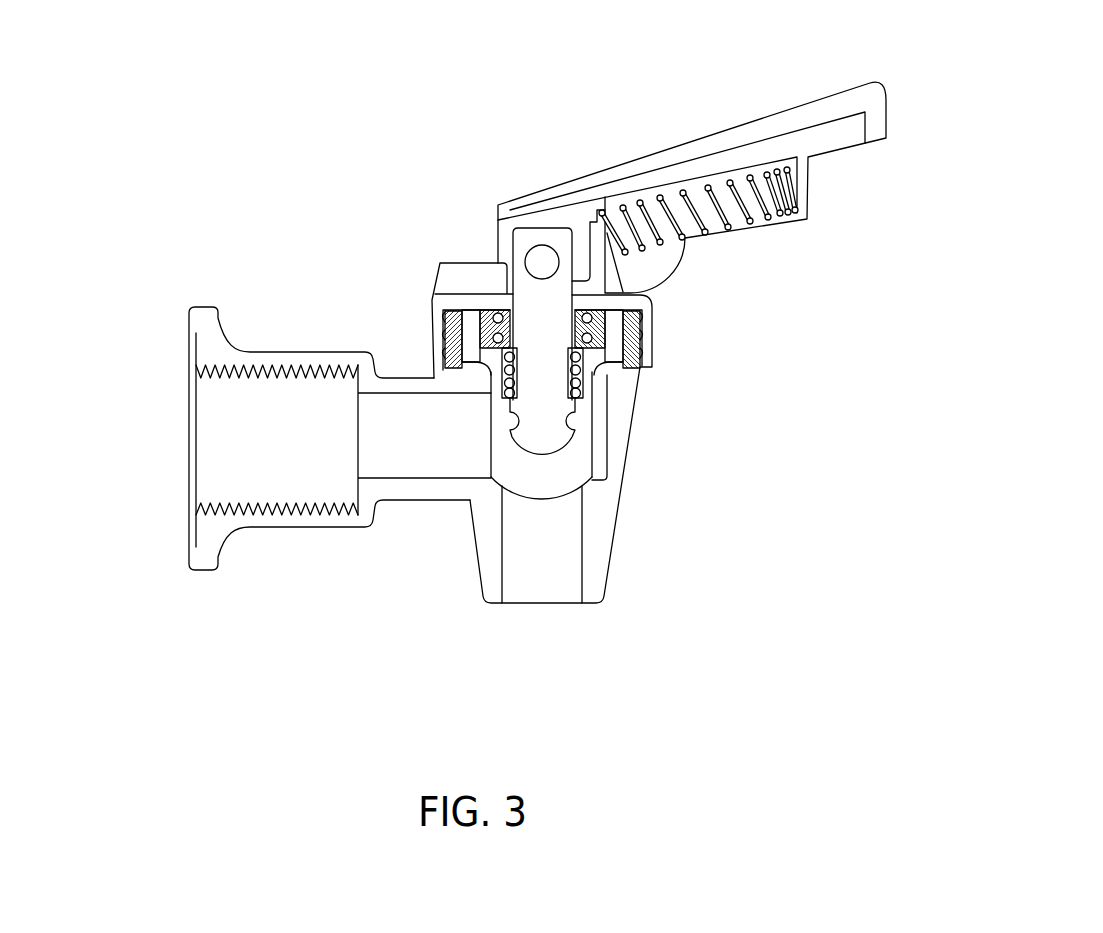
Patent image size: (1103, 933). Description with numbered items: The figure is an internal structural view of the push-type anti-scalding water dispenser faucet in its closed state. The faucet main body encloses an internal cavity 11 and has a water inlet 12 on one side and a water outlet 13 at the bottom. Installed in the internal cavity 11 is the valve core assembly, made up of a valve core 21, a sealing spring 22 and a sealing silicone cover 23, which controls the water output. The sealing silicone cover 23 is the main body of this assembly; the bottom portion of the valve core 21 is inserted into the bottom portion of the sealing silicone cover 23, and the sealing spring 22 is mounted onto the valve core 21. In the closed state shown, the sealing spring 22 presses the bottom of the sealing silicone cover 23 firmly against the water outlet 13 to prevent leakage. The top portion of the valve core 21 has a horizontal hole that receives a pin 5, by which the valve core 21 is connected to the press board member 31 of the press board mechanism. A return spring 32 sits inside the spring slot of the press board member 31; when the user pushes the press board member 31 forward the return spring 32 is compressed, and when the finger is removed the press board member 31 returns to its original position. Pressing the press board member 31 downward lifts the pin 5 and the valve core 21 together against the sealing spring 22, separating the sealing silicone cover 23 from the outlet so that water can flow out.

The pin 5 is at (542, 262).
The internal cavity 11 is at (475, 435).
The water inlet 12 is at (215, 434).
The water outlet 13 is at (546, 571).
The valve core 21 is at (537, 388).
The sealing spring 22 is at (582, 347).
The sealing silicone cover 23 is at (549, 476).
The press board member 31 is at (563, 205).
The return spring 32 is at (714, 204).